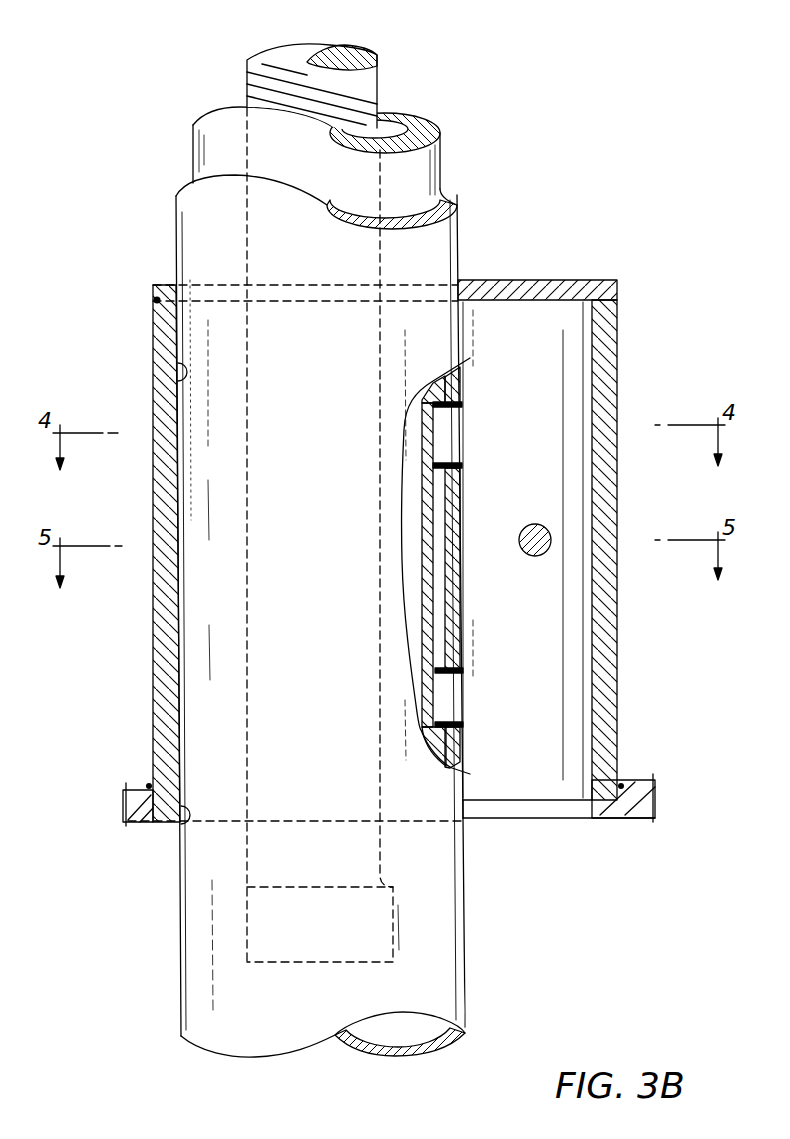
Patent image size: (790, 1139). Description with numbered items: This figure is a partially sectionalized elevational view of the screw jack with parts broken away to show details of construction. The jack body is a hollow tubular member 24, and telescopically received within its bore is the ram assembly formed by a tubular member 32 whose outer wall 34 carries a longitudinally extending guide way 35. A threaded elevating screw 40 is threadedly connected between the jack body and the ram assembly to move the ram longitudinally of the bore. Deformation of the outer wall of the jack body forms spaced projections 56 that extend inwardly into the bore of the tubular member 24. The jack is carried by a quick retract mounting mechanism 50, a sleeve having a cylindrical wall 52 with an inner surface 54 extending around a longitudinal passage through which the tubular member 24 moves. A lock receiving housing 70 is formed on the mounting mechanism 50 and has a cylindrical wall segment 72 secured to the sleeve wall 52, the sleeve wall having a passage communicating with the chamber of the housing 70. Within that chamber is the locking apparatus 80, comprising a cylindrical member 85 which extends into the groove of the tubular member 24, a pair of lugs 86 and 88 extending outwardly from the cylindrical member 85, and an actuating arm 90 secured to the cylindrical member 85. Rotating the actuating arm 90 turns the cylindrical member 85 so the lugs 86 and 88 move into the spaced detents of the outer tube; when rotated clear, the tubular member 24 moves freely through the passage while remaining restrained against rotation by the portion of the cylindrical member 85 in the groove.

The tubular member 24 is at (190, 212).
The tubular member 32 is at (195, 152).
The outer wall 34 is at (468, 925).
The guide way 35 is at (440, 135).
The threaded elevating screw 40 is at (350, 45).
The quick retract mounting mechanism 50 is at (540, 237).
The cylindrical wall 52 is at (160, 345).
The inner surface 54 is at (178, 372).
The spaced projections 56 is at (433, 442).
The lock receiving housing 70 is at (622, 796).
The cylindrical wall segment 72 is at (615, 342).
The locking apparatus 80 is at (537, 318).
The cylindrical member 85 is at (505, 782).
The lug 86 is at (452, 425).
The lug 88 is at (457, 687).
The actuating arm 90 is at (537, 527).